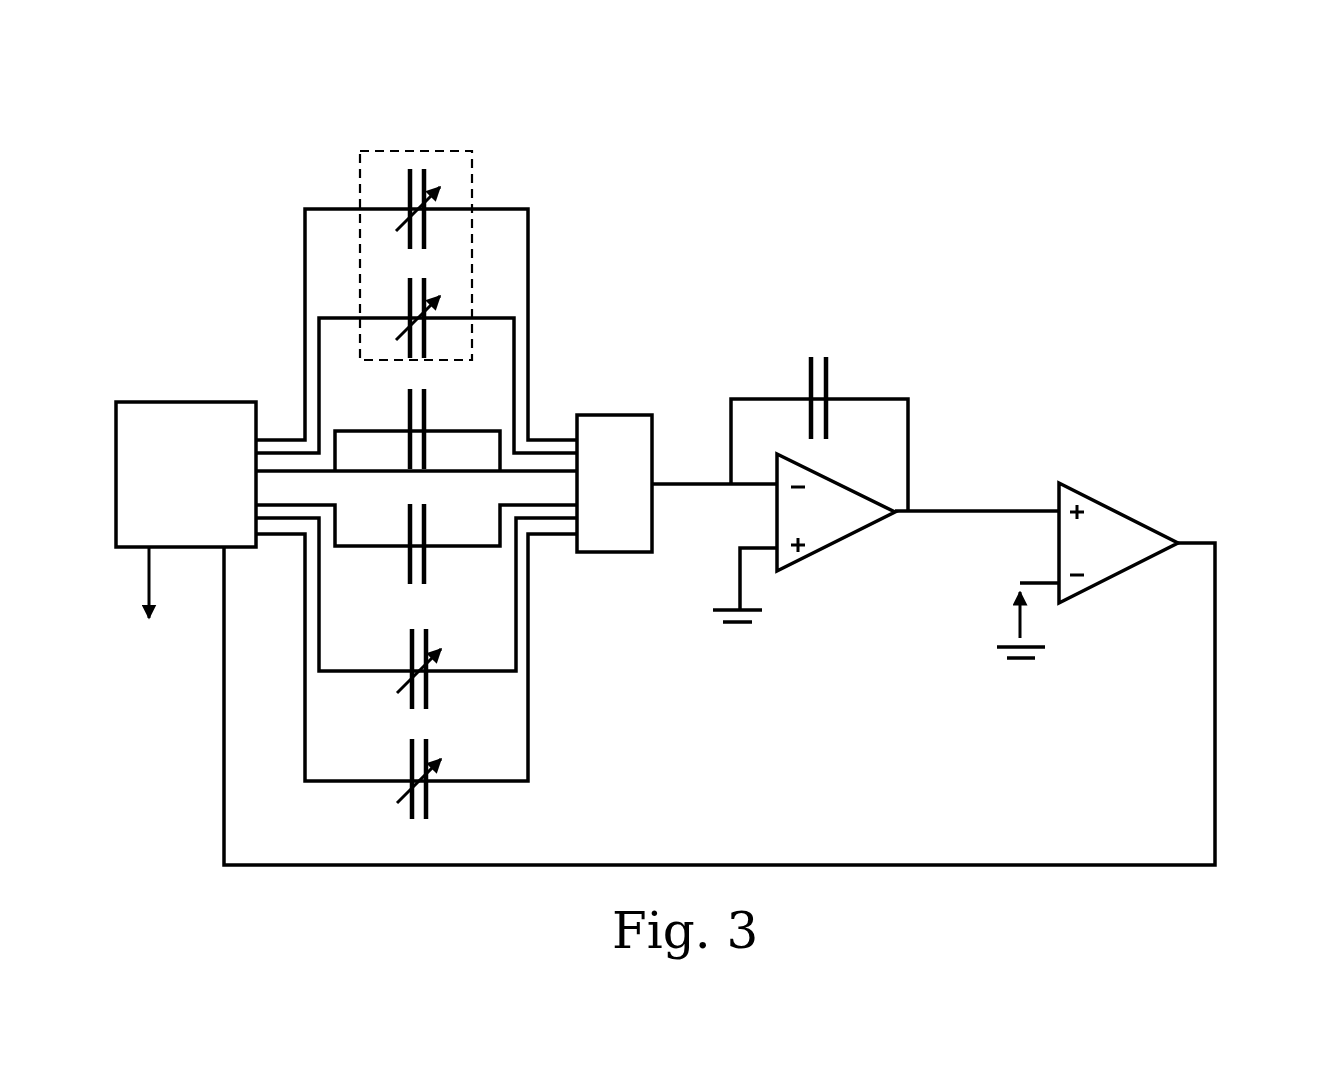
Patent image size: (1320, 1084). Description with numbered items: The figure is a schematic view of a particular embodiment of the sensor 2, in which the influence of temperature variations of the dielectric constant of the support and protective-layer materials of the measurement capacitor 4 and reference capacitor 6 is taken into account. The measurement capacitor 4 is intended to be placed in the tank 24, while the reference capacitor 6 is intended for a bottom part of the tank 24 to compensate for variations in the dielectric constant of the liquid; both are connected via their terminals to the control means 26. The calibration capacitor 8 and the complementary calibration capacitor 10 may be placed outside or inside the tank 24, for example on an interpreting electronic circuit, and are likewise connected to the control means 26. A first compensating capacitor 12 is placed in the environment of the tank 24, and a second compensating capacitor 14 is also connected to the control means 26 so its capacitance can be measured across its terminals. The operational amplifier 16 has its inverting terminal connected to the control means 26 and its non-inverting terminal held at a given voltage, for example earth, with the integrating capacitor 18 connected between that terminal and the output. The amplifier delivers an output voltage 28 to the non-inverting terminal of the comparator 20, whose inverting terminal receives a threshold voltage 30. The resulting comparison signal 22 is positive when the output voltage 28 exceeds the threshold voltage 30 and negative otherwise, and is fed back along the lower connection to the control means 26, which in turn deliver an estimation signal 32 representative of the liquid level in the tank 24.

The sensor 2 is at (957, 204).
The measurement capacitor 4 is at (405, 208).
The reference capacitor 6 is at (405, 316).
The calibration capacitor 8 is at (399, 429).
The complementary calibration capacitor 10 is at (393, 544).
The first compensating capacitor 12 is at (403, 669).
The second compensating capacitor 14 is at (404, 779).
The operational amplifier 16 is at (833, 545).
The integrating capacitor 18 is at (819, 405).
The comparator 20 is at (1112, 508).
The comparison signal 22 is at (748, 696).
The tank 24 is at (435, 151).
The control means 26 is at (168, 402).
The output voltage 28 is at (977, 491).
The threshold voltage 30 is at (1003, 625).
The estimation signal 32 is at (146, 611).